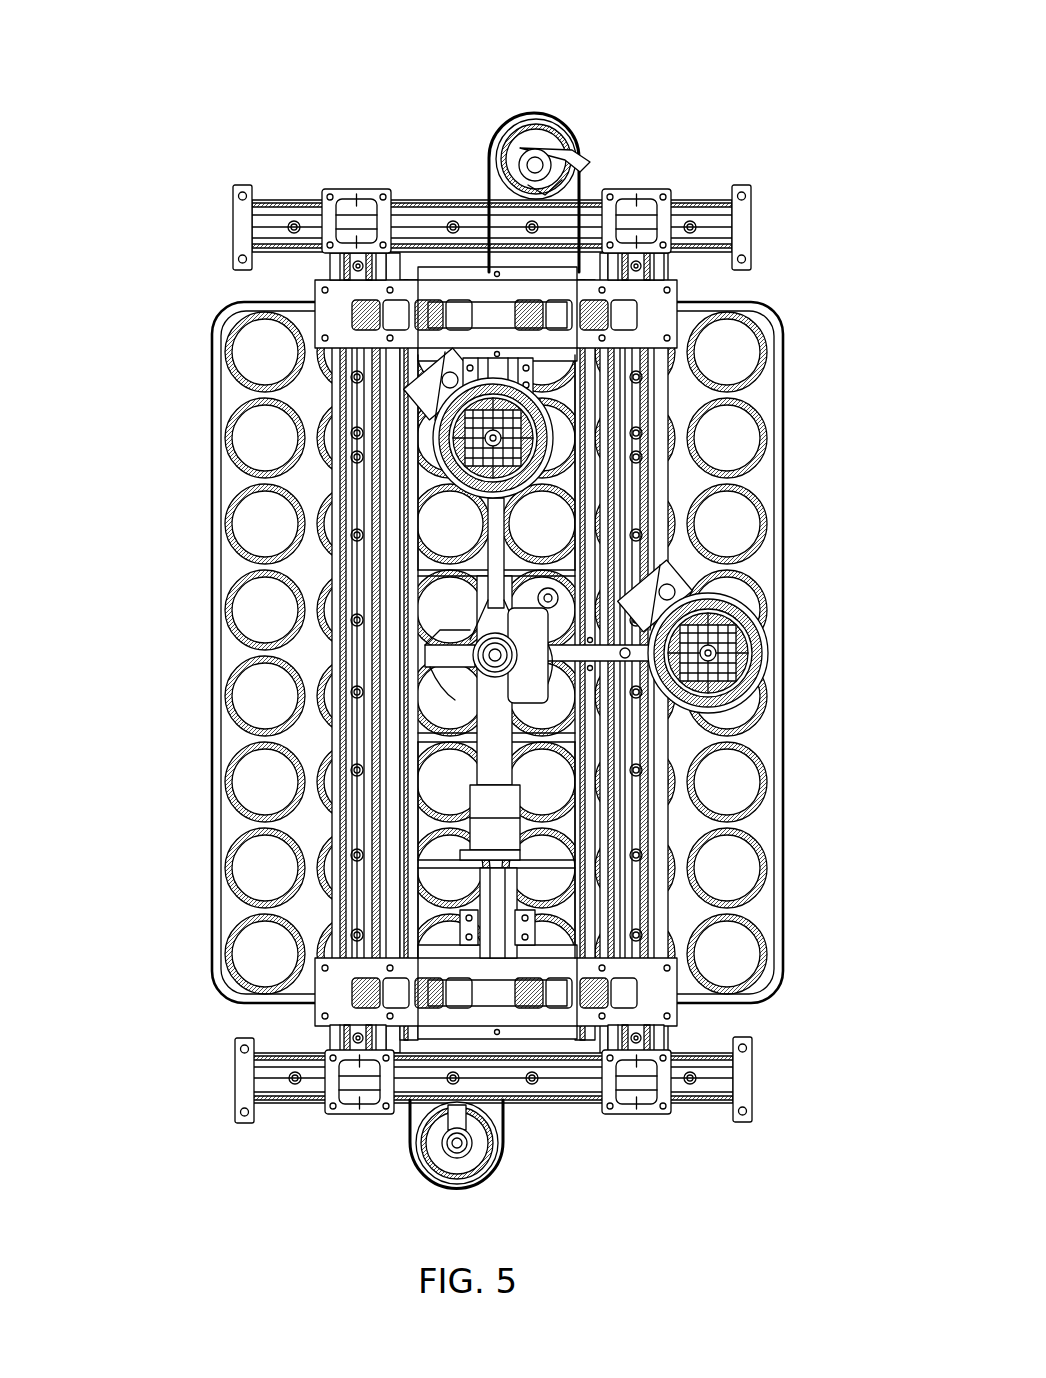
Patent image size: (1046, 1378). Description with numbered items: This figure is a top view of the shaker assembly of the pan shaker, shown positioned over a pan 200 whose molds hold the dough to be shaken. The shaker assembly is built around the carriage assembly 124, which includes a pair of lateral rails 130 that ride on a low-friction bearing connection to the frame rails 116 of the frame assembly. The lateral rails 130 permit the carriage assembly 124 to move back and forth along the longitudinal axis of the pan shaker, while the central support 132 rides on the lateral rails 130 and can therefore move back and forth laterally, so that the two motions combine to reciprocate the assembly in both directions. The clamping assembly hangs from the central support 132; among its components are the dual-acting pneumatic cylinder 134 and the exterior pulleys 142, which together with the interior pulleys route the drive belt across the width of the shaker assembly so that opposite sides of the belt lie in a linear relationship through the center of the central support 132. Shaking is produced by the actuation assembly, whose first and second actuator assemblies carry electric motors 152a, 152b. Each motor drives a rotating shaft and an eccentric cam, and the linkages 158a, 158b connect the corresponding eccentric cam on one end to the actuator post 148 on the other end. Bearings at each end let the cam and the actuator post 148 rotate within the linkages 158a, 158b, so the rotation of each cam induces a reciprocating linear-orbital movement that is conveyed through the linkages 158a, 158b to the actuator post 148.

The carriage assembly 124 is at (150, 292).
The exterior pulleys 142 is at (540, 137).
The frame rails 116 is at (745, 228).
The central support 132 is at (668, 298).
The electric motor 152b is at (530, 445).
The lateral rails 130 is at (648, 505).
The linkage 158b is at (500, 555).
The actuator post 148 is at (492, 650).
The electric motor 152a is at (732, 640).
The dual-acting pneumatic cylinder 134 is at (495, 770).
The linkage 158a is at (578, 652).
The pan 200 is at (758, 898).